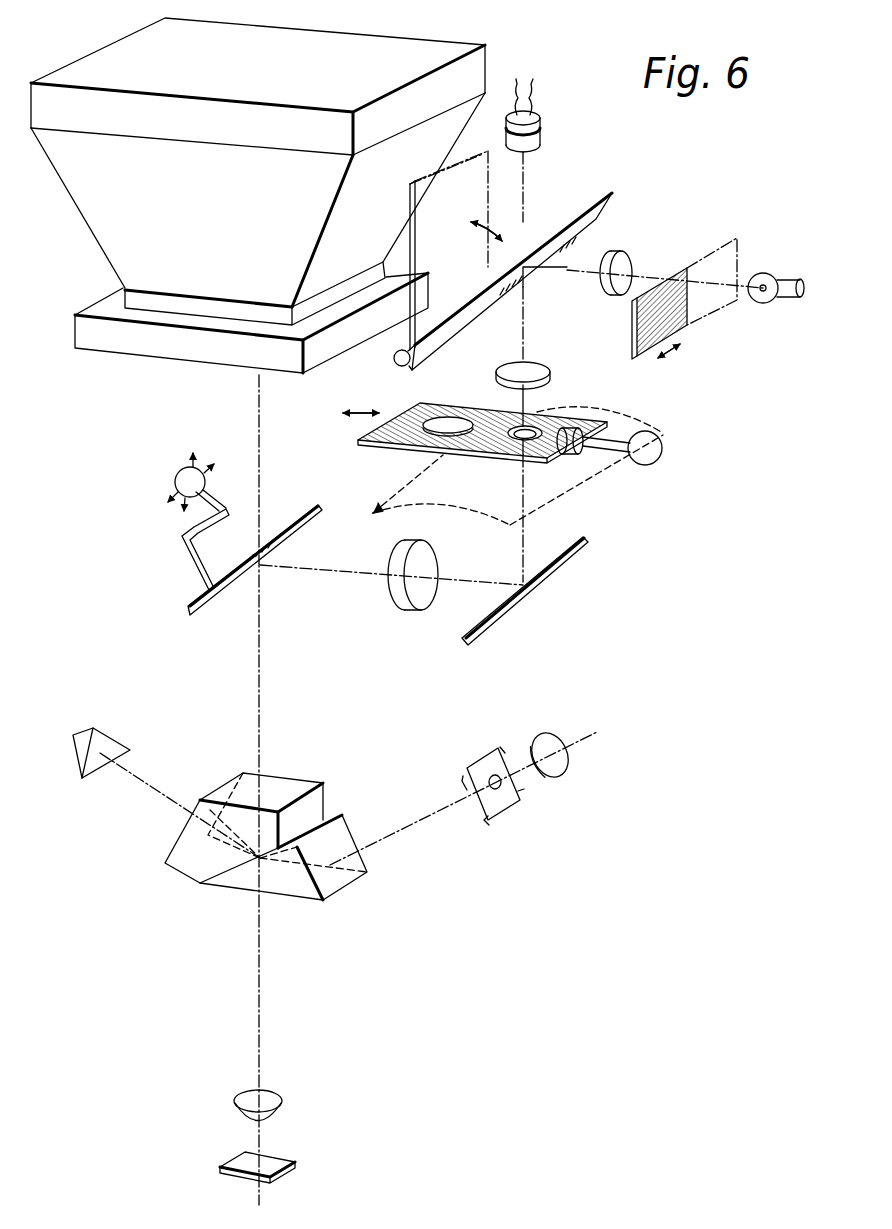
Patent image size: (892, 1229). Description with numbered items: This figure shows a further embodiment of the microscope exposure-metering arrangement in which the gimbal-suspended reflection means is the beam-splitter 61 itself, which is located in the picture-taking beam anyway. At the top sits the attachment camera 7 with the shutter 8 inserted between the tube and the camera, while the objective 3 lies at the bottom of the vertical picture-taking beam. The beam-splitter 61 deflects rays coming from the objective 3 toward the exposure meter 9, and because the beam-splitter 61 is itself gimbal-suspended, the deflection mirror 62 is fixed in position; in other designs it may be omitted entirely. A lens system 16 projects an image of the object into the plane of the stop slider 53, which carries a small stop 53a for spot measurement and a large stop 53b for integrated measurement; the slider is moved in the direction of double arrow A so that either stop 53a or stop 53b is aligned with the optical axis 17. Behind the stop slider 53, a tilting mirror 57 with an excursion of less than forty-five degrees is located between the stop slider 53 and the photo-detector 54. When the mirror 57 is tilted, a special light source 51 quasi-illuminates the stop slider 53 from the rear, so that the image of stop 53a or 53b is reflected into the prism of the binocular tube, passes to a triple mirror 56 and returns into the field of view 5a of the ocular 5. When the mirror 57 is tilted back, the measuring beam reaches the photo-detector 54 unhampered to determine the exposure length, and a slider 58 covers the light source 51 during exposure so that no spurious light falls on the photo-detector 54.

The attachment camera 7 is at (418, 58).
The shutter 8 is at (193, 350).
The photo-detector 54 is at (543, 132).
The tilting mirror 57 is at (594, 218).
The light source 51 is at (767, 273).
The slider 58 is at (697, 307).
The stop slider 53 is at (501, 455).
The stop 53a is at (543, 463).
The stop 53b is at (440, 432).
The exposure meter 9 is at (634, 505).
The optical axis 17 is at (523, 553).
The beam-splitter 61 is at (297, 530).
The lens system 16 is at (410, 598).
The deflection mirror 62 is at (522, 597).
The triple mirror 56 is at (98, 753).
The ocular 5 is at (553, 778).
The field of view 5a is at (503, 805).
The objective 3 is at (282, 1102).